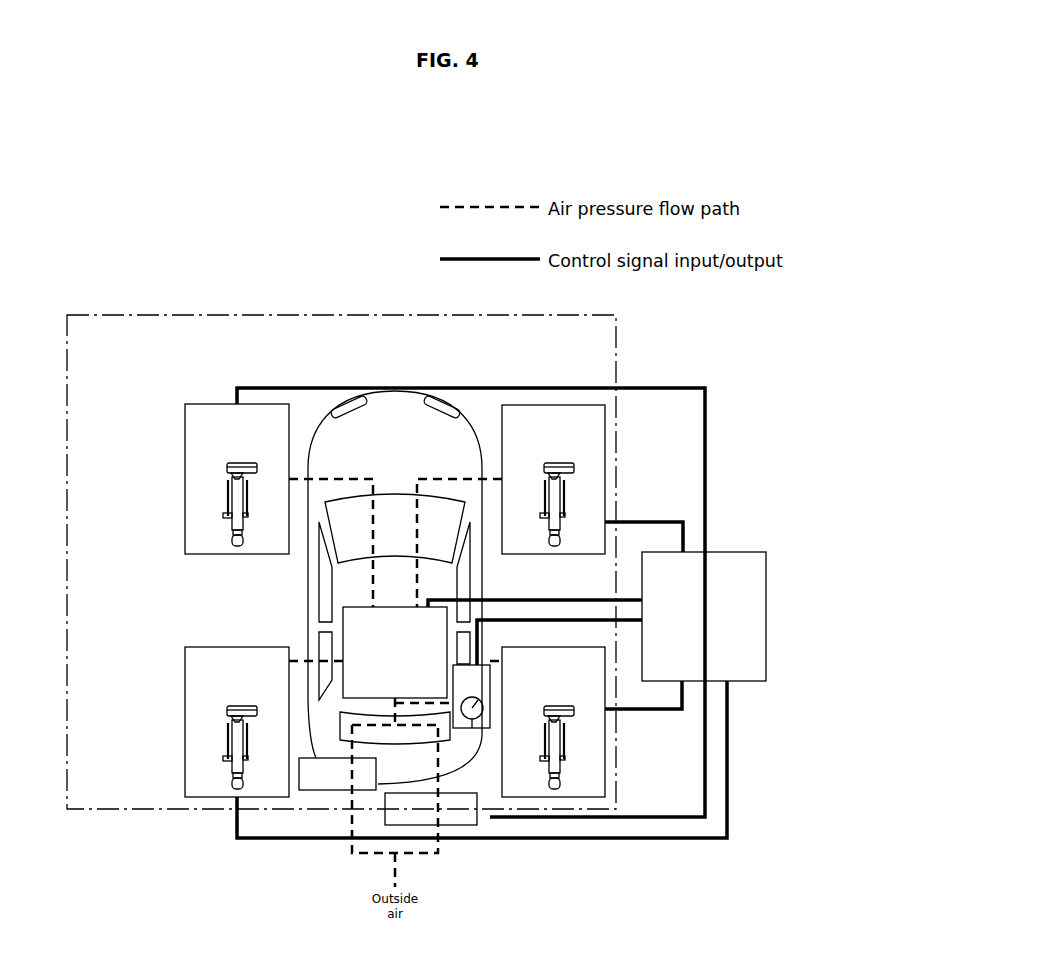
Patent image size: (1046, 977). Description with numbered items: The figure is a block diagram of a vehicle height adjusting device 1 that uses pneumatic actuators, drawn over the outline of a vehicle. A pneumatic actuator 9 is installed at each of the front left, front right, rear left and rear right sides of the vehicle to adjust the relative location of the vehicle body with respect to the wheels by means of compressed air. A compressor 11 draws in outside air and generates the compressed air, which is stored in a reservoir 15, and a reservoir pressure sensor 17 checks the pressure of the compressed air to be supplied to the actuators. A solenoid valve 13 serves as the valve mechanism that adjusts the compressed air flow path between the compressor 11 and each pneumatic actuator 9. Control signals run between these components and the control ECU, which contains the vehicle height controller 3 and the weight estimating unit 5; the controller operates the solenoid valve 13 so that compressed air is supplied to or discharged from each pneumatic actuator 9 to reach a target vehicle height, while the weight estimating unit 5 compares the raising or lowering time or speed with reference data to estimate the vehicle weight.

The vehicle height adjusting device 1 is at (285, 315).
The vehicle height controller 3 is at (745, 616).
The weight estimating unit 5 is at (766, 617).
The pneumatic actuator 9 is at (212, 404).
The compressor 11 is at (458, 825).
The solenoid valve 13 is at (343, 625).
The reservoir 15 is at (333, 790).
The reservoir pressure sensor 17 is at (483, 728).